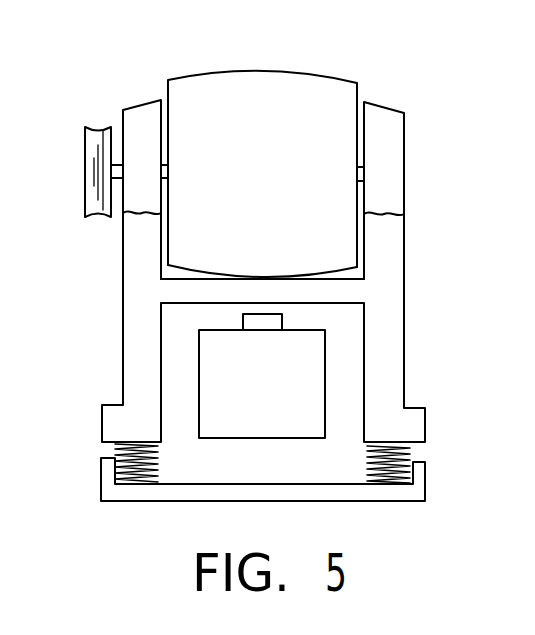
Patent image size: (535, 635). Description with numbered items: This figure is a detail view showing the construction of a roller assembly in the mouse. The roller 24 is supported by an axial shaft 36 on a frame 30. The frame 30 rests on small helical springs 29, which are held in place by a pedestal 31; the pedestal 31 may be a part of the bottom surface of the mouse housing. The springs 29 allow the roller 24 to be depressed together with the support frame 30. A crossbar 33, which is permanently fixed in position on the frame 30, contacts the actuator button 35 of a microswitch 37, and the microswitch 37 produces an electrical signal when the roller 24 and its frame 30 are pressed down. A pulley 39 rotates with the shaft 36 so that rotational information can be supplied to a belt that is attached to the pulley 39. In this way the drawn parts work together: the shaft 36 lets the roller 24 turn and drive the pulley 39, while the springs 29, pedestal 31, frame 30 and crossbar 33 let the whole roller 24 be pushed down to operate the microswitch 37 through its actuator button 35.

The roller 24 is at (325, 75).
The helical springs 29 is at (115, 448).
The frame 30 is at (395, 188).
The pedestal 31 is at (425, 482).
The crossbar 33 is at (343, 296).
The actuator button 35 is at (262, 320).
The axial shaft 36 is at (360, 175).
The microswitch 37 is at (264, 425).
The pulley 39 is at (86, 208).